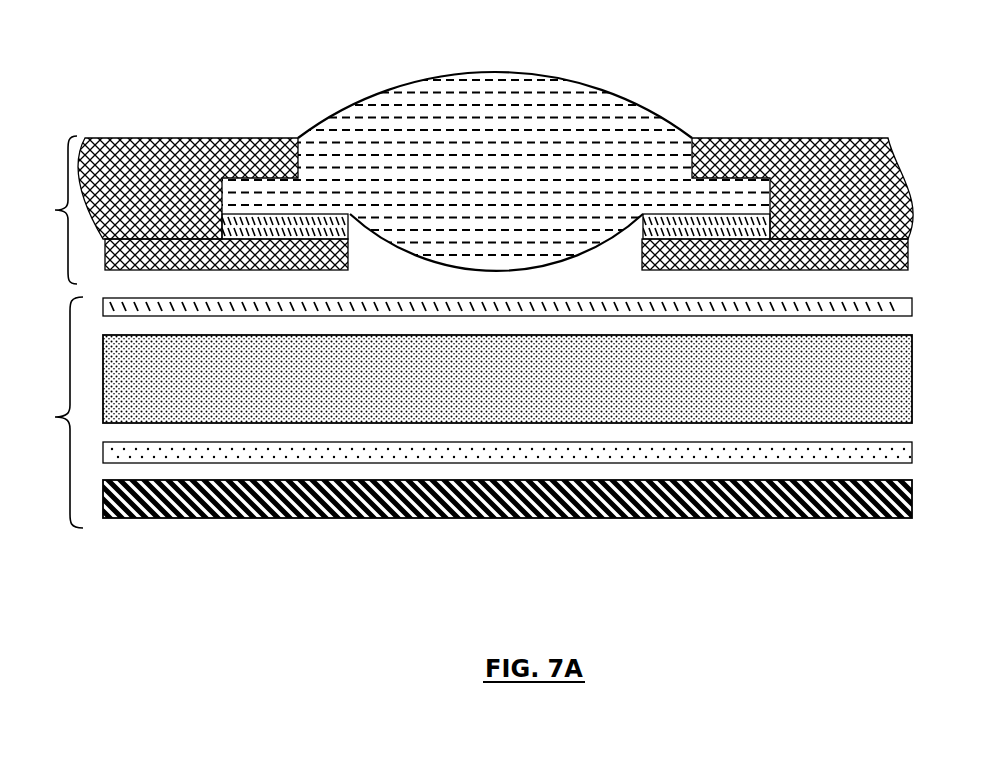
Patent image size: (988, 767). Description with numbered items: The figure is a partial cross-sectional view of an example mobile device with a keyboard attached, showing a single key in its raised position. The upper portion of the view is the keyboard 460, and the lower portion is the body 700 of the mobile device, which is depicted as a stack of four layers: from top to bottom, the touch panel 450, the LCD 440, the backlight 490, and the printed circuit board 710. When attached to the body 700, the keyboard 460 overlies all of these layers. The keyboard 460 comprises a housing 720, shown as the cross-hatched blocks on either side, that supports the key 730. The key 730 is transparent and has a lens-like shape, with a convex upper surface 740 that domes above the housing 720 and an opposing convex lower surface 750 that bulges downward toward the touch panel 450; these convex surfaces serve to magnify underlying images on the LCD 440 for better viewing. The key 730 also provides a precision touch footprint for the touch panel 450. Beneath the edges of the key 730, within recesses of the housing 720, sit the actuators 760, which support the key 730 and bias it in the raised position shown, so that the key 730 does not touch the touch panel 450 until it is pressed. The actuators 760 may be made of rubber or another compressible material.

The keyboard 460 is at (465, 151).
The body 700 is at (477, 447).
The housing 720 is at (187, 202).
The key 730 is at (560, 113).
The upper surface 740 is at (375, 105).
The lower surface 750 is at (380, 240).
The actuator 760 is at (252, 225).
The touch panel 450 is at (552, 303).
The LCD 440 is at (473, 368).
The backlight 490 is at (657, 453).
The printed circuit board 710 is at (288, 500).